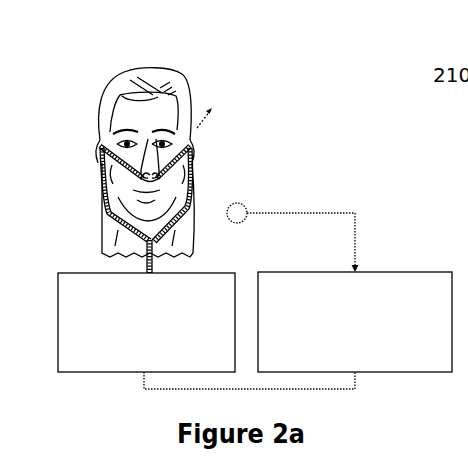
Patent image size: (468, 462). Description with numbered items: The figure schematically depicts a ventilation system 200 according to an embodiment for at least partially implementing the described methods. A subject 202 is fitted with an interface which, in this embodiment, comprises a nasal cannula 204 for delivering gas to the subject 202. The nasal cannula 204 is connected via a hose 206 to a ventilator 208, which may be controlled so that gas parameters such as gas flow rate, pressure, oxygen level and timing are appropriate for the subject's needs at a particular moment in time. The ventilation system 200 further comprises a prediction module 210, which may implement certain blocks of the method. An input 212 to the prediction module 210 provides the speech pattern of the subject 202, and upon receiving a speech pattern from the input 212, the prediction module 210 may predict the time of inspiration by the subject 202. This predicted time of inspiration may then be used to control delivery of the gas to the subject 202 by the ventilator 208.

The ventilation system 200 is at (296, 86).
The subject 202 is at (180, 92).
The nasal cannula 204 is at (150, 176).
The hose 206 is at (112, 218).
The ventilator 208 is at (127, 336).
The prediction module 210 is at (335, 336).
The input 212 is at (247, 206).